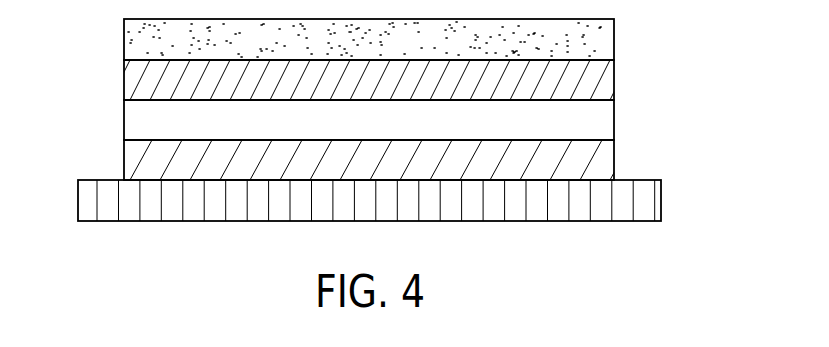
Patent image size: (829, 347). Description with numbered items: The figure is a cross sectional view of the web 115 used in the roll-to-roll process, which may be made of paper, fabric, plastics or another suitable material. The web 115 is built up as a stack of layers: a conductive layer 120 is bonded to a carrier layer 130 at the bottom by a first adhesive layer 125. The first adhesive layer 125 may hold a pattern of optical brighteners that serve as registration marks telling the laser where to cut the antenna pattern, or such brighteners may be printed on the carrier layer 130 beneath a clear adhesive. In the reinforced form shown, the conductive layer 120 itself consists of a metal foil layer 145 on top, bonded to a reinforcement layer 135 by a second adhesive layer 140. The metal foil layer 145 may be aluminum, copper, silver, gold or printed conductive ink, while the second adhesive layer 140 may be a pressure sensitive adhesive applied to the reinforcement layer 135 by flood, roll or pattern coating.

The web 115 is at (415, 117).
The conductive layer 120 is at (381, 78).
The first adhesive layer 125 is at (130, 161).
The carrier layer 130 is at (85, 202).
The reinforcement layer 135 is at (130, 123).
The second adhesive layer 140 is at (130, 83).
The metal foil layer 145 is at (130, 43).